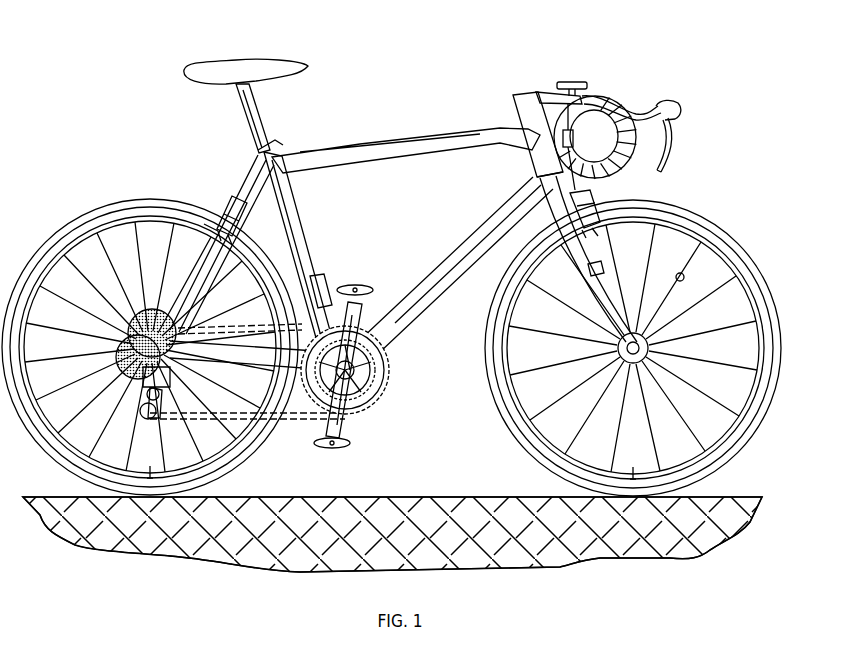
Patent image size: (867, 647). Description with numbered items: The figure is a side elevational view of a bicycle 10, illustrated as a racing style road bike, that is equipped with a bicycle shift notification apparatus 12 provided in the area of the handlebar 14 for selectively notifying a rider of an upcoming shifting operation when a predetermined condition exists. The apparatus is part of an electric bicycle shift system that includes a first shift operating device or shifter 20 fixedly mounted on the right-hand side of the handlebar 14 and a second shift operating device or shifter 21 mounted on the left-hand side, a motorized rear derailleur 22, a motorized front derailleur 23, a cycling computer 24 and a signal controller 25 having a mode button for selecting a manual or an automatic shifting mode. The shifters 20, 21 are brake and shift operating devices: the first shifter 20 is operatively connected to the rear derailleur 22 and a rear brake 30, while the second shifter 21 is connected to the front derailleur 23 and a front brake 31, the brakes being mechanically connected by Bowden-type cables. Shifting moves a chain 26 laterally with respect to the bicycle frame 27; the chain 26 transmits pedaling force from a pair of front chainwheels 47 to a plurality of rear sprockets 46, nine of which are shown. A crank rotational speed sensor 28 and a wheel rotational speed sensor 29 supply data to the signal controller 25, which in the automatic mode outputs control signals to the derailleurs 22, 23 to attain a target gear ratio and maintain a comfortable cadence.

The bicycle 10 is at (398, 248).
The bicycle shift notification apparatus 12 is at (717, 117).
The handlebar 14 is at (576, 92).
The first shift operating device 20 is at (726, 132).
The second shift operating device 21 is at (677, 98).
The motorized rear derailleur 22 is at (150, 418).
The motorized front derailleur 23 is at (368, 302).
The cycling computer 24 is at (569, 84).
The signal controller 25 is at (612, 105).
The chain 26 is at (297, 422).
The bicycle frame 27 is at (393, 163).
The crank rotational speed sensor 28 is at (277, 374).
The wheel rotational speed sensor 29 is at (605, 272).
The rear brake 30 is at (227, 205).
The front brake 31 is at (586, 197).
The rear sprockets 46 is at (123, 323).
The front chainwheels 47 is at (389, 358).